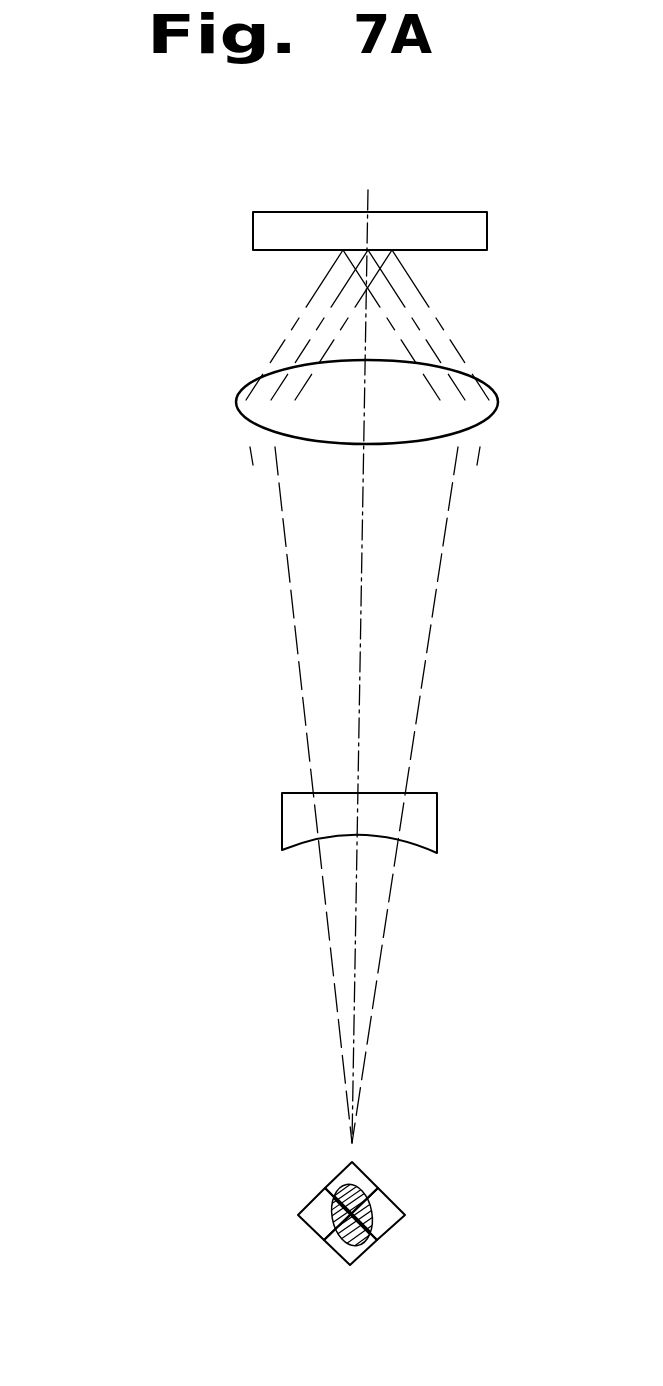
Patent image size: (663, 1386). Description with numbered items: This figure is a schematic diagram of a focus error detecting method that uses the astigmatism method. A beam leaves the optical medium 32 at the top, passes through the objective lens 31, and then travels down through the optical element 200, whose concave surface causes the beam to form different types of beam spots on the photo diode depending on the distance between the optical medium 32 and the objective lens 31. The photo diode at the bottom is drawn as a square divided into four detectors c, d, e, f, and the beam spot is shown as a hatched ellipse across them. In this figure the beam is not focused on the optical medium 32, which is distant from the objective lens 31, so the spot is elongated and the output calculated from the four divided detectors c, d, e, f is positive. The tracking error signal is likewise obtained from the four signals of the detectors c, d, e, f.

The optical medium 32 is at (262, 228).
The objective lens 31 is at (235, 403).
The optical element 200 is at (287, 808).
The divided detector c is at (332, 1181).
The divided detector d is at (360, 1253).
The divided detector e is at (312, 1226).
The divided detector f is at (390, 1200).